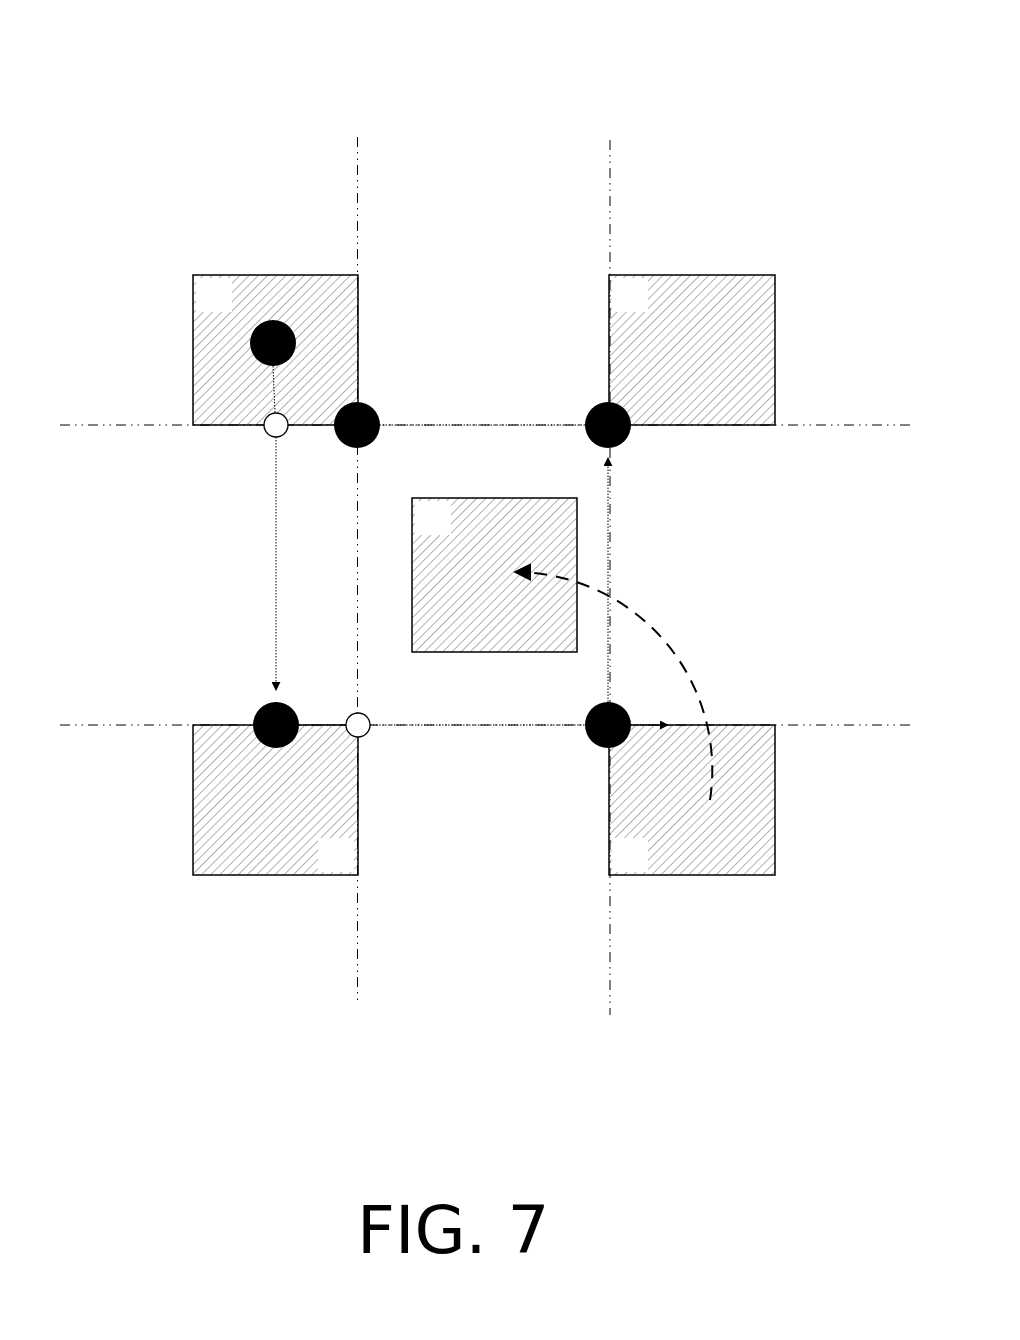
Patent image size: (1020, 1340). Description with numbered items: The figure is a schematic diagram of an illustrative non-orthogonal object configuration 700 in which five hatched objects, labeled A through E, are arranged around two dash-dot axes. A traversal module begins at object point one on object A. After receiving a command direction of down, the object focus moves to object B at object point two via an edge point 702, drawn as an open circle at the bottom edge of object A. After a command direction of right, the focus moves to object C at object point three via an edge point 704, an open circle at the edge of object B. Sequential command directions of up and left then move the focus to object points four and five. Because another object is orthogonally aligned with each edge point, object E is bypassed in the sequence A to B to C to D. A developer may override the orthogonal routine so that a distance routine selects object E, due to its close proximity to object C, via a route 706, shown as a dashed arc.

The non-orthogonal object configuration 700 is at (758, 55).
The edge point 702 is at (268, 433).
The edge point 704 is at (370, 717).
The route 706 is at (687, 615).